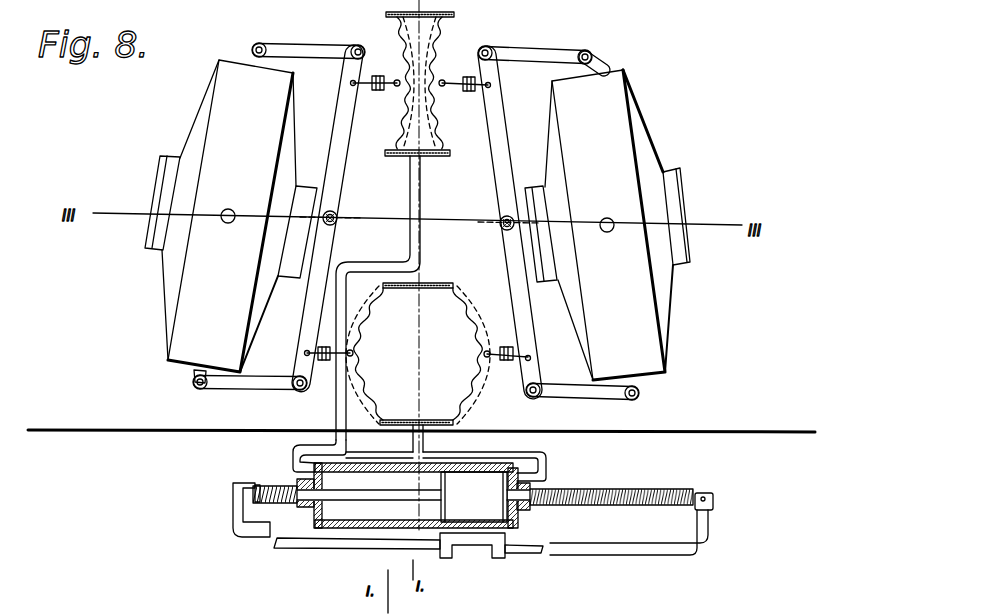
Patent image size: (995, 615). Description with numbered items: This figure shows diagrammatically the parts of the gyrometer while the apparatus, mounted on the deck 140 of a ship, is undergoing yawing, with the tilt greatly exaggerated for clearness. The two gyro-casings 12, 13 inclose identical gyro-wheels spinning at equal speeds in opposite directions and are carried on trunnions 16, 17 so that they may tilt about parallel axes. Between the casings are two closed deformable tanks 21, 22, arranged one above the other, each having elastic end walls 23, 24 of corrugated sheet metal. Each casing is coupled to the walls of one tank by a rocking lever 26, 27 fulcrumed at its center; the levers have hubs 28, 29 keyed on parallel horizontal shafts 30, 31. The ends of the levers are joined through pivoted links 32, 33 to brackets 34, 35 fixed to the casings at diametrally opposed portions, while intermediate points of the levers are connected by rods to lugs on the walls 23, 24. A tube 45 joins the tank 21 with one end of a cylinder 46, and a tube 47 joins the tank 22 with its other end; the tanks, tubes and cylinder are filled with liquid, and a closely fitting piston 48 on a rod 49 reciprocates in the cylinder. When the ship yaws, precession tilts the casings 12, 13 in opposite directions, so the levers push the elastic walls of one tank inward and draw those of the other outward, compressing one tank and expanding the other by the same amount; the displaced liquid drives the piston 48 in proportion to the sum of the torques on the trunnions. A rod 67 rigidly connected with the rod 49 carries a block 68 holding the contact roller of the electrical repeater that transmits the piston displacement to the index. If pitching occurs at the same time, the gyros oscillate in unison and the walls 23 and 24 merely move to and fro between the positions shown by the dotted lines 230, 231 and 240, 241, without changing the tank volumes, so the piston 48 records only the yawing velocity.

The gyro-casing 12 is at (228, 93).
The gyro-casing 13 is at (620, 140).
The trunnion 16 is at (218, 239).
The trunnion 17 is at (609, 232).
The deformable tank 21 is at (420, 84).
The deformable tank 22 is at (417, 354).
The elastic end wall 23 is at (350, 372).
The elastic end wall 24 is at (472, 397).
The rocking lever 26 is at (342, 163).
The rocking lever 27 is at (495, 163).
The hub 28 is at (338, 219).
The hub 29 is at (503, 222).
The shaft 30 is at (336, 226).
The shaft 31 is at (500, 229).
The pivoted link 32 is at (330, 27).
The pivoted link 33 is at (553, 37).
The bracket 34 is at (192, 373).
The bracket 35 is at (598, 62).
The tube 45 is at (290, 450).
The cylinder 46 is at (372, 526).
The tube 47 is at (548, 466).
The piston 48 is at (470, 518).
The rod 49 is at (343, 494).
The rod 67 is at (265, 545).
The block 68 is at (503, 557).
The deck 140 is at (84, 437).
The dotted line 230 is at (397, 89).
The dotted line 231 is at (398, 122).
The dotted line 240 is at (430, 97).
The dotted line 241 is at (445, 125).